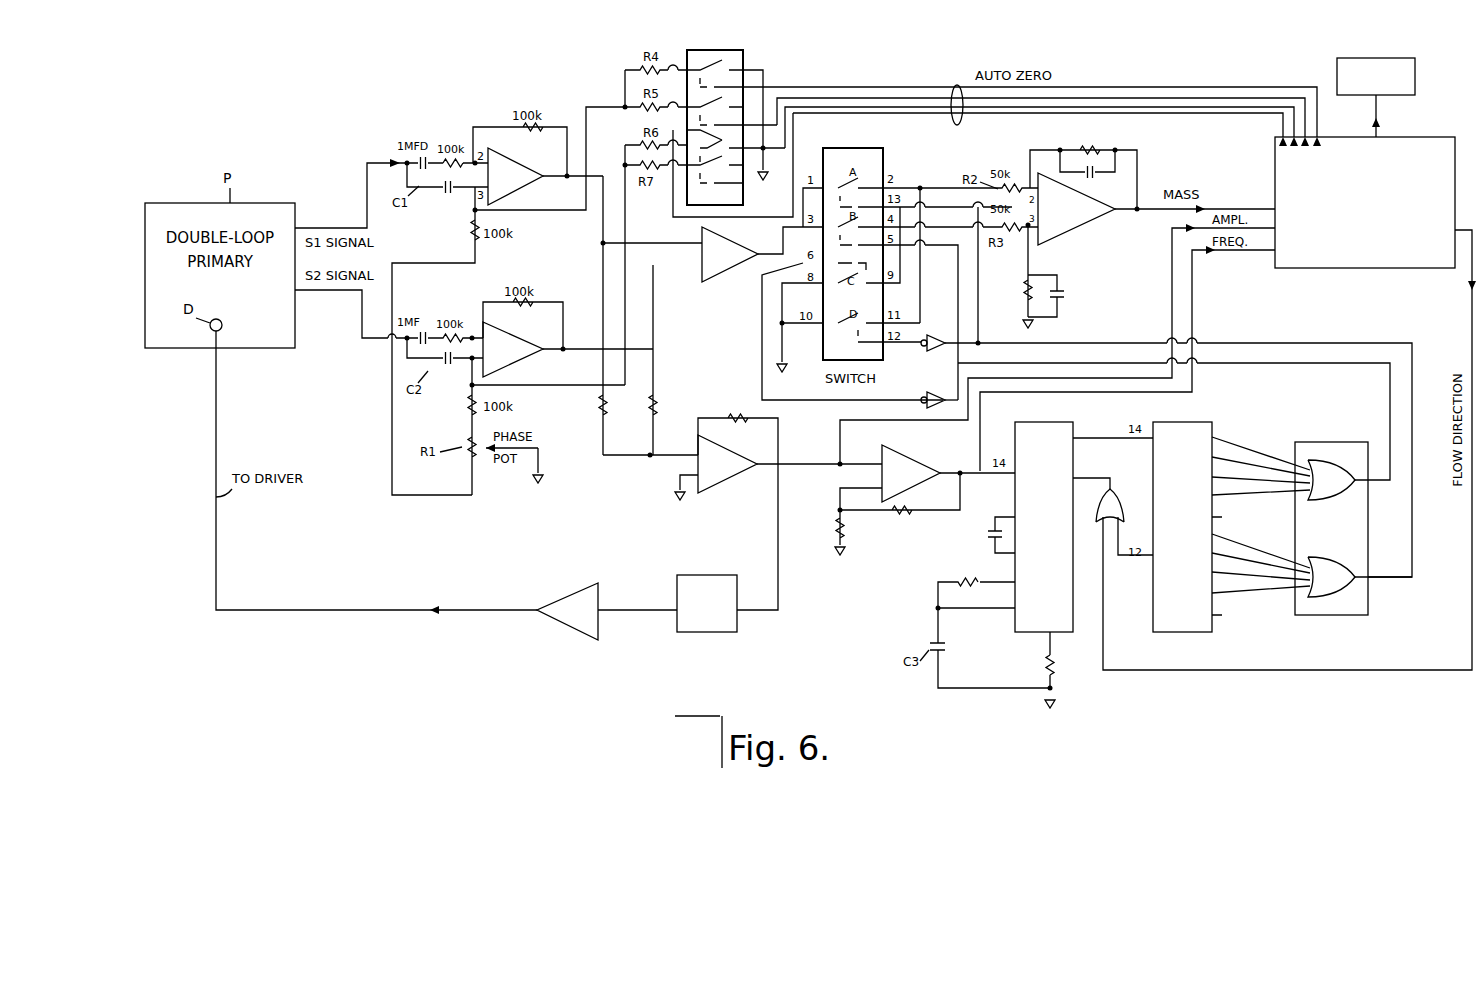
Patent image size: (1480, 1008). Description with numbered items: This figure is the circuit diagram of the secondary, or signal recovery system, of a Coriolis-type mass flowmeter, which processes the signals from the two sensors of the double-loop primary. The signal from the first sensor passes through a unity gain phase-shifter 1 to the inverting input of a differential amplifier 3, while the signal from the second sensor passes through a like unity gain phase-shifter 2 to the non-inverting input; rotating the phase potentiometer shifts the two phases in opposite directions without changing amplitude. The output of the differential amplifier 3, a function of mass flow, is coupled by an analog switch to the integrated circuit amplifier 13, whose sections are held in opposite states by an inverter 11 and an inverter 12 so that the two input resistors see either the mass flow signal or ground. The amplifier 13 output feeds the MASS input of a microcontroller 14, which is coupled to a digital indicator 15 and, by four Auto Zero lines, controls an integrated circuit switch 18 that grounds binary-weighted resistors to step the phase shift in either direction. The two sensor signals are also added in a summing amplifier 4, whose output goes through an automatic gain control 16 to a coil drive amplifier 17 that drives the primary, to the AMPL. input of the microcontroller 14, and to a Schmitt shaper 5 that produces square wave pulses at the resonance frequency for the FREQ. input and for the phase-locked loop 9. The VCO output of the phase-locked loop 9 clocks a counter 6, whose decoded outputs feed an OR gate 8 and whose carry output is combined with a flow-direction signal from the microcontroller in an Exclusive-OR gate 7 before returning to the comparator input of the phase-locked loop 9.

The unity gain phase-shifter 1 is at (520, 167).
The unity gain phase-shifter 2 is at (517, 341).
The differential amplifier 3 is at (720, 286).
The summing amplifier 4 is at (736, 456).
The Schmitt shaper 5 is at (920, 461).
The counter 6 is at (1203, 426).
The Exclusive-OR gate 7 is at (1118, 503).
The OR gate 8 is at (1335, 442).
The phase-locked loop 9 is at (1073, 427).
The inverter 11 is at (935, 336).
The inverter 12 is at (933, 393).
The integrated circuit amplifier 13 is at (1080, 234).
The microcontroller 14 is at (1445, 136).
The digital indicator 15 is at (1417, 77).
The automatic gain control 16 is at (727, 574).
The coil drive amplifier 17 is at (590, 588).
The integrated circuit switch 18 is at (750, 65).